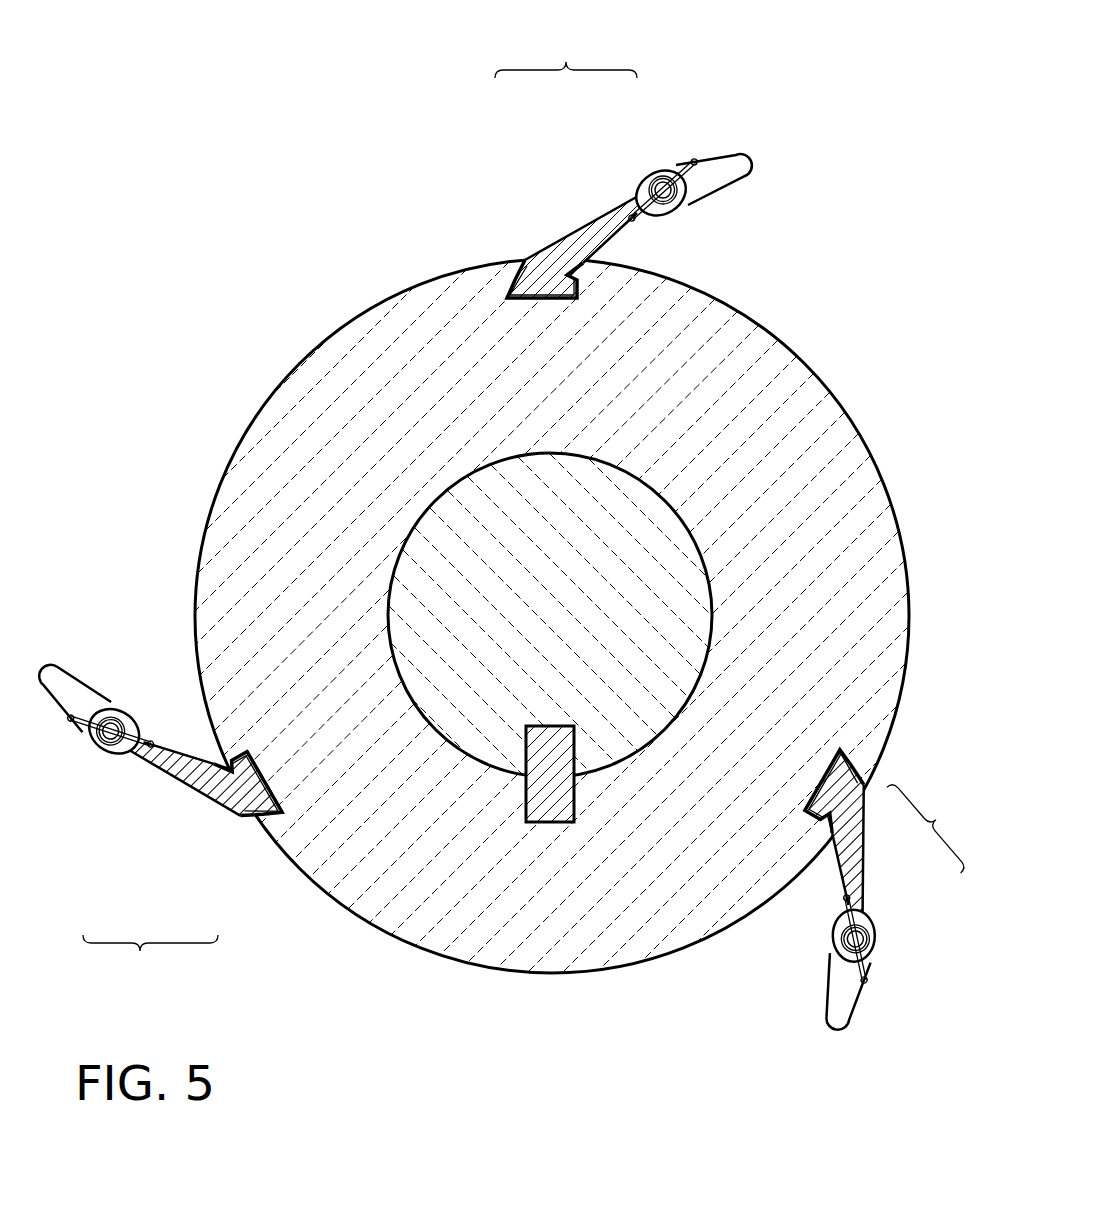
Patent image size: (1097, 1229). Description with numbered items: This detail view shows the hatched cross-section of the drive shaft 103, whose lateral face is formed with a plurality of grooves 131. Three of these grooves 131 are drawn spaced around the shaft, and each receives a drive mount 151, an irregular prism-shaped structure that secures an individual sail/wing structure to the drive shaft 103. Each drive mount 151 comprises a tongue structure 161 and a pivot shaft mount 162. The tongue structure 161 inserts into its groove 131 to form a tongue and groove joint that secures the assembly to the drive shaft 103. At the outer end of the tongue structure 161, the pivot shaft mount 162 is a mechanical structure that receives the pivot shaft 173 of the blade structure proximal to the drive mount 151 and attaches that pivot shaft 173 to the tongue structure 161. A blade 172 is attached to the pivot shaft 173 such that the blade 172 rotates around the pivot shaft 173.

The drive shaft 103 is at (823, 453).
The grooves 131 is at (588, 263).
The drive mount 151 is at (530, 500).
The tongue structure 161 is at (582, 236).
The pivot shaft mount 162 is at (641, 180).
The blade 172 is at (706, 195).
The pivot shaft 173 is at (694, 160).